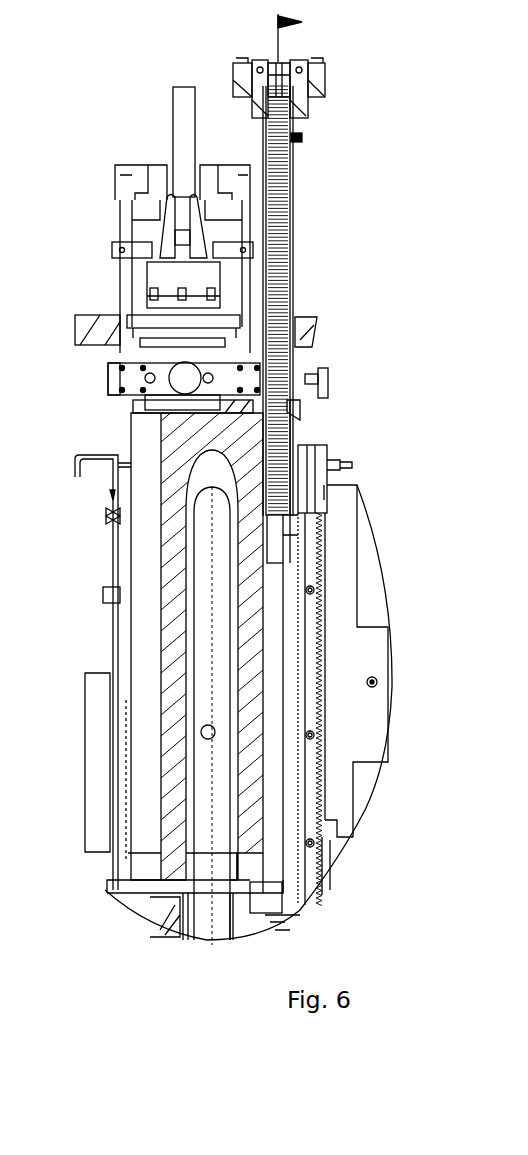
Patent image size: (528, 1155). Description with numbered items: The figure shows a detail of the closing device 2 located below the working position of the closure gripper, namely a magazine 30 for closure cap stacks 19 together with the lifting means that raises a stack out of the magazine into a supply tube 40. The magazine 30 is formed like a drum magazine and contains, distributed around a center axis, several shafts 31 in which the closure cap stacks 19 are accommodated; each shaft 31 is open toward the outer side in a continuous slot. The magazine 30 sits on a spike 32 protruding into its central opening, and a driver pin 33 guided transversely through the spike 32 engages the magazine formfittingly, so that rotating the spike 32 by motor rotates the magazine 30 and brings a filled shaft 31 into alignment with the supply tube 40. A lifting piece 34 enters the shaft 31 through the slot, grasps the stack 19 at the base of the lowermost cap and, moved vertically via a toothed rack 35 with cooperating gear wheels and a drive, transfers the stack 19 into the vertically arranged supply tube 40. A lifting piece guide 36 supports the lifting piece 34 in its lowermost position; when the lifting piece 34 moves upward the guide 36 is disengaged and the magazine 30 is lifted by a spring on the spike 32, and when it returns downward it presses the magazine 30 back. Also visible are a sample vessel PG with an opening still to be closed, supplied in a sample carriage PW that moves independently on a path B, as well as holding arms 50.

The gripping device 2 is at (2, 45).
The closure cap stack 19 is at (280, 280).
The magazine 30 is at (168, 651).
The shaft 31 is at (145, 677).
The spike 32 is at (197, 807).
The driver pin 33 is at (203, 735).
The lifting piece 34 is at (278, 528).
The toothed rack 35 is at (317, 660).
The lifting piece guide 36 is at (268, 906).
The supply tube 40 is at (296, 212).
The holding arms 50 is at (232, 172).
The sample vessel PG is at (173, 114).
The sample carriage PW is at (160, 280).
The path B is at (128, 318).